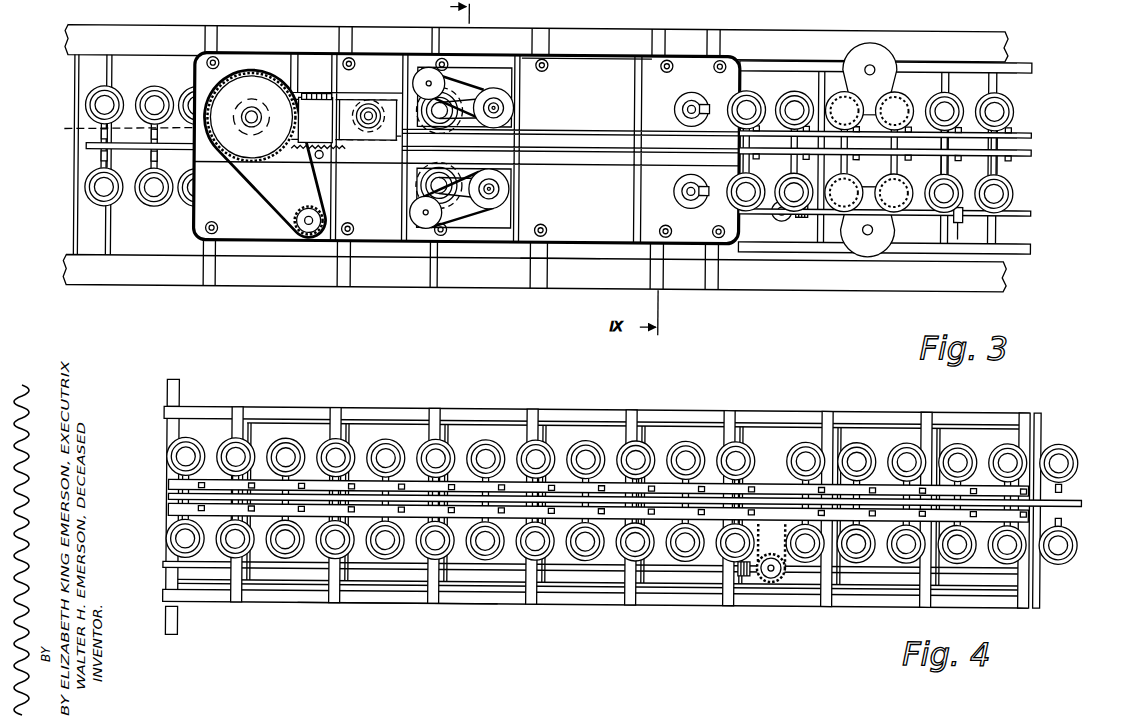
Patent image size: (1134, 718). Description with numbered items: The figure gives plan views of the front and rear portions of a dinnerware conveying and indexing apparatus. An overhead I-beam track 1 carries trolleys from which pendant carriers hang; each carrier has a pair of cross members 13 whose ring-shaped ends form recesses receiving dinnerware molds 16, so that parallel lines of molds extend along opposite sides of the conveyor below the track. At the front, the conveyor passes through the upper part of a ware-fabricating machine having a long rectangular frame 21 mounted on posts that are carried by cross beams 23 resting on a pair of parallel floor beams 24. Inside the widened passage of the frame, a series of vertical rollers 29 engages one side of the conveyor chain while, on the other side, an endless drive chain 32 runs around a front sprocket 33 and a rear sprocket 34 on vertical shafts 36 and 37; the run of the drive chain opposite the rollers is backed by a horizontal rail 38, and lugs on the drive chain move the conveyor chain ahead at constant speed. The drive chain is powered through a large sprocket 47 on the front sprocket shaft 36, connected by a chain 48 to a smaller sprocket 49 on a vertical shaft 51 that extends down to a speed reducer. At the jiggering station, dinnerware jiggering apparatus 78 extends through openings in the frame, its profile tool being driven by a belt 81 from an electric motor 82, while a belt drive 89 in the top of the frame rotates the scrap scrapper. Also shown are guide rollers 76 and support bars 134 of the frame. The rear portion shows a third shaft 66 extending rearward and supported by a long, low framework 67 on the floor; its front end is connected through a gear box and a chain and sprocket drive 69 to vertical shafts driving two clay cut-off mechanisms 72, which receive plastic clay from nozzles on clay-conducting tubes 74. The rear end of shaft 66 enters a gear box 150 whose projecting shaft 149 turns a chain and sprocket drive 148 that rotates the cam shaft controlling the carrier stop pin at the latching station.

In FIG. 3, the I-beam track 1 is at (85, 146).
In FIG. 4, the I-beam track 1 is at (1084, 495).
In FIG. 3, the cross member 13 is at (99, 163).
In FIG. 4, the cross member 13 is at (1066, 484).
In FIG. 3, the dinnerware mold 16 is at (96, 195).
In FIG. 4, the dinnerware mold 16 is at (1078, 450).
In FIG. 3, the rectangular frame 21 is at (574, 52).
In FIG. 3, the cross beam 23 is at (546, 279).
In FIG. 3, the floor beam 24 is at (74, 43).
In FIG. 3, the vertical roller 29 is at (323, 155).
In FIG. 3, the drive chain 32 is at (322, 90).
In FIG. 3, the front sprocket 33 is at (145, 126).
In FIG. 3, the rear sprocket 34 is at (372, 97).
In FIG. 3, the front sprocket shaft 36 is at (252, 106).
In FIG. 3, the rear sprocket shaft 37 is at (423, 97).
In FIG. 3, the horizontal rail 38 is at (315, 119).
In FIG. 3, the large sprocket 47 is at (244, 78).
In FIG. 3, the chain 48 is at (293, 217).
In FIG. 3, the smaller sprocket 49 is at (309, 225).
In FIG. 3, the vertical shaft 51 is at (327, 237).
In FIG. 3, the third shaft 66 is at (1022, 205).
In FIG. 4, the third shaft 66 is at (166, 563).
In FIG. 4, the long low framework 67 is at (391, 600).
In FIG. 3, the chain and sprocket drive 69 is at (797, 224).
In FIG. 3, the clay cut-off mechanism 72 is at (876, 52).
In FIG. 3, the clay-conducting tube 74 is at (826, 93).
In FIG. 3, the guide roller 76 is at (681, 98).
In FIG. 3, the dinnerware jiggering apparatus 78 is at (494, 83).
In FIG. 3, the belt 81 is at (450, 200).
In FIG. 3, the electric motor 82 is at (412, 203).
In FIG. 3, the belt drive 89 is at (483, 77).
In FIG. 3, the support bar 134 is at (1020, 146).
In FIG. 4, the support bar 134 is at (170, 507).
In FIG. 4, the chain and sprocket drive 148 is at (770, 548).
In FIG. 4, the shaft 149 is at (772, 576).
In FIG. 4, the gear box 150 is at (787, 573).